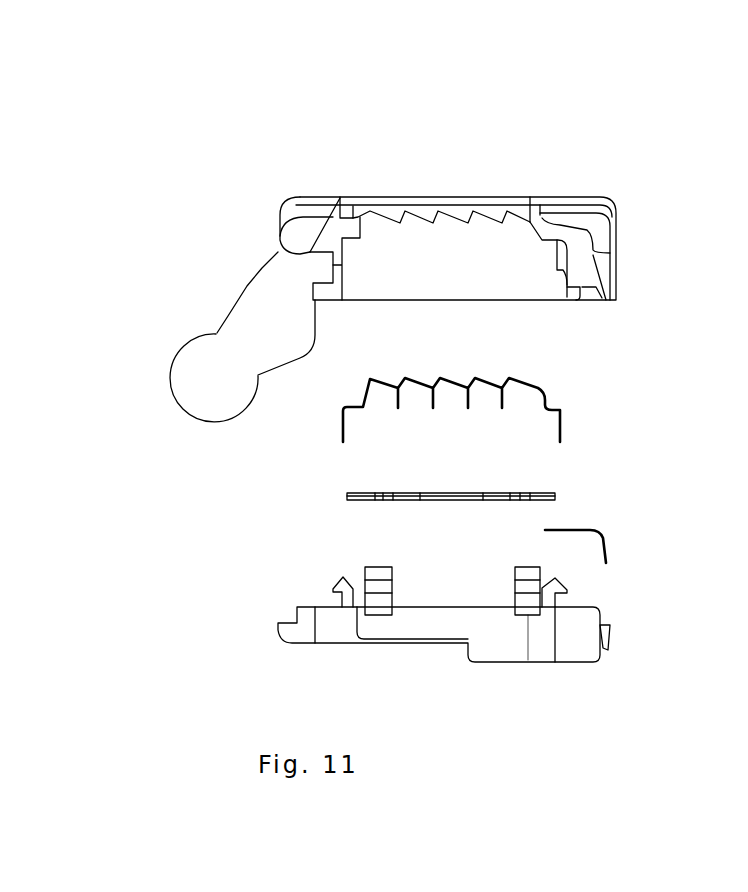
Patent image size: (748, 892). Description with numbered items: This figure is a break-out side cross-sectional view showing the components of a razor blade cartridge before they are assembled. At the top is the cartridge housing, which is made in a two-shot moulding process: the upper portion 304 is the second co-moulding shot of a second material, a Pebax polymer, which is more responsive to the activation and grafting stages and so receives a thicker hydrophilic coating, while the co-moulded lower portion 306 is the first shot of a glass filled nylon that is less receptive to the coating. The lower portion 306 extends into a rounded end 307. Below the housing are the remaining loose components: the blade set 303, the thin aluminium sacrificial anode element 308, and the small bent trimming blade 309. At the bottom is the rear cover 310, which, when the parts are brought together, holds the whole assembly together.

The blade set 303 is at (560, 408).
The upper portion 304 is at (300, 200).
The lower portion 306 is at (307, 268).
The knob 307 is at (215, 400).
The aluminium sacrificial anode element 308 is at (547, 493).
The trimming blade 309 is at (603, 538).
The rear cover 310 is at (520, 640).